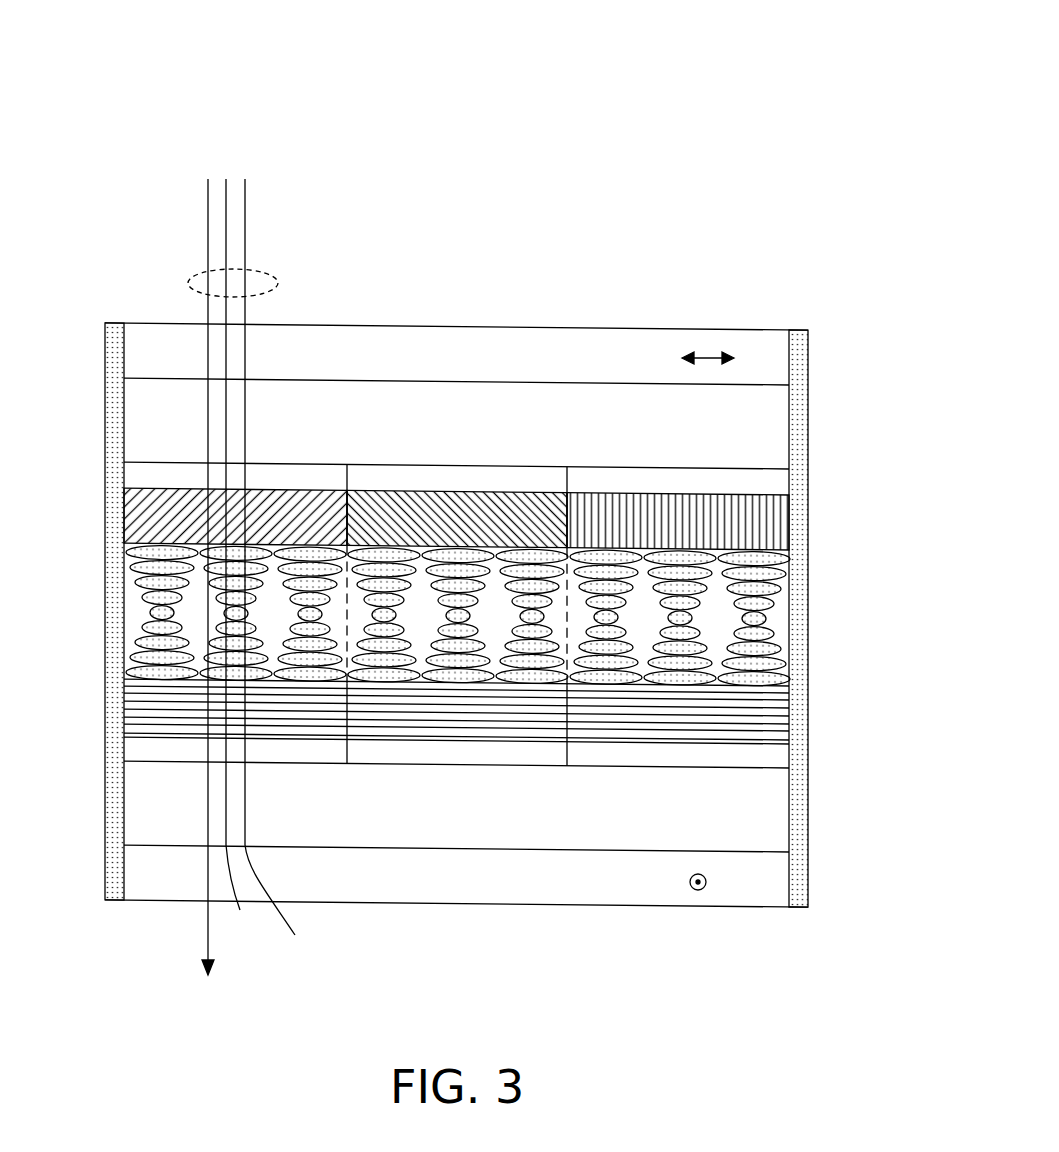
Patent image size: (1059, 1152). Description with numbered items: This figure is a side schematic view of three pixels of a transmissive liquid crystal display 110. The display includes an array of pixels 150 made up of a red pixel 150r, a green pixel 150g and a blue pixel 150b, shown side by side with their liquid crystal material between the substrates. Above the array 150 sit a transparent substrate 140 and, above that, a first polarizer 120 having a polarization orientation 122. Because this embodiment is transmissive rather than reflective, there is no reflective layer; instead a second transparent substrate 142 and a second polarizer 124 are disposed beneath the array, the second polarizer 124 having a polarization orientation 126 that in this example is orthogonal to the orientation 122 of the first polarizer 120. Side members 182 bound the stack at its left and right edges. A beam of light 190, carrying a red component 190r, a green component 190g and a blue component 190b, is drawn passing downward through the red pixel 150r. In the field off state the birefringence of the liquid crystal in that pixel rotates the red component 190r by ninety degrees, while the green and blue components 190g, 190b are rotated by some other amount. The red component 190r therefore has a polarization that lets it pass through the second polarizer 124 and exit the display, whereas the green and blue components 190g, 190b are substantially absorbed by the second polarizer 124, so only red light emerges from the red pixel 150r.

The transmissive liquid crystal display 110 is at (717, 118).
The first polarizer 120 is at (786, 359).
The polarization orientation of the first polarizer 122 is at (709, 352).
The second polarizer 124 is at (787, 873).
The polarization orientation of the second polarizer 126 is at (702, 889).
The transparent substrate 140 is at (786, 415).
The second transparent substrate 142 is at (787, 800).
The array of pixels 150 is at (800, 468).
The red pixel 150r is at (162, 461).
The green pixel 150g is at (531, 466).
The blue pixel 150b is at (735, 467).
The seal / spacer 182 is at (113, 858).
The beam of light 190 is at (188, 281).
The red component 190r is at (208, 218).
The green component 190g is at (226, 224).
The blue component 190b is at (246, 248).